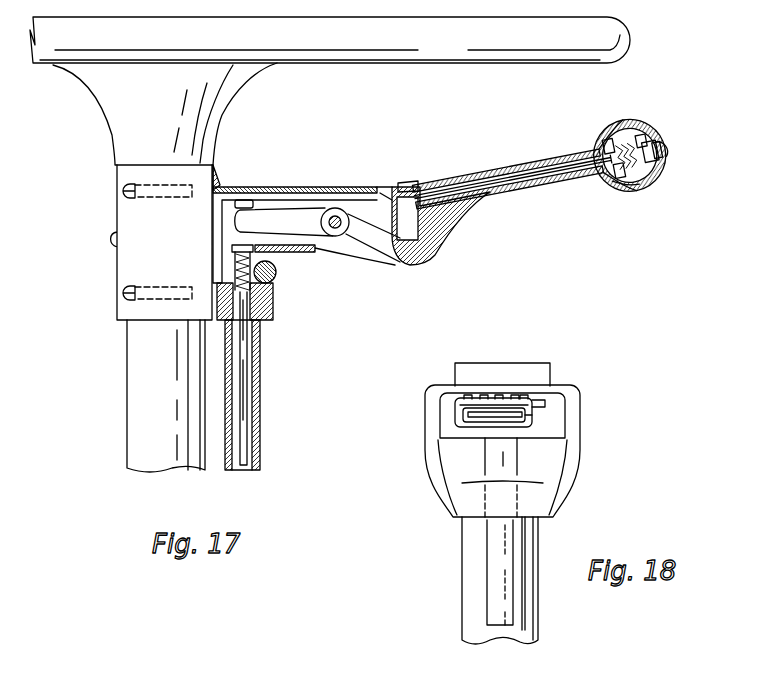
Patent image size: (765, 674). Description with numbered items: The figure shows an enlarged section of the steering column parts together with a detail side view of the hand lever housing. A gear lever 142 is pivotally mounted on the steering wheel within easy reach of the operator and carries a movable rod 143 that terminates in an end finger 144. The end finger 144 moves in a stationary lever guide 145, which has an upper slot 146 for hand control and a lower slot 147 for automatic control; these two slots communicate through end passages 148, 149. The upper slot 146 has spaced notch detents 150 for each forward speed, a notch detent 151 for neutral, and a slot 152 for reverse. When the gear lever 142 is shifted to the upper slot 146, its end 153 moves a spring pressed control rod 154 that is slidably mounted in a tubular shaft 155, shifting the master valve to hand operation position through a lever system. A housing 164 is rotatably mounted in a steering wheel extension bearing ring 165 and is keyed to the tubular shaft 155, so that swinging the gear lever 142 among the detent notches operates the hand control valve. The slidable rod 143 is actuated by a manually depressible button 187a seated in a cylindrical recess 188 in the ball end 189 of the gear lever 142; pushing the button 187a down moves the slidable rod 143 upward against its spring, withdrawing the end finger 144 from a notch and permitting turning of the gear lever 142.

In FIG. 17, the gear lever 142 is at (502, 170).
In FIG. 17, the movable rod 143 is at (518, 182).
In FIG. 17, the end finger 144 is at (417, 187).
In FIG. 17, the stationary lever guide 145 is at (393, 193).
In FIG. 18, the stationary lever guide 145 is at (557, 425).
In FIG. 18, the upper slot 146 is at (468, 405).
In FIG. 18, the lower slot 147 is at (482, 422).
In FIG. 18, the end passage 148 is at (460, 415).
In FIG. 18, the end passage 149 is at (532, 419).
In FIG. 18, the notch detents 150 is at (513, 397).
In FIG. 18, the notch detent 151 is at (528, 398).
In FIG. 18, the slot 152 is at (545, 403).
In FIG. 17, the end 153 is at (283, 226).
In FIG. 17, the spring pressed control rod 154 is at (248, 357).
In FIG. 17, the tubular shaft 155 is at (258, 427).
In FIG. 17, the housing 164 is at (305, 252).
In FIG. 17, the steering wheel extension bearing ring 165 is at (273, 303).
In FIG. 17, the manually depressible button 187a is at (663, 145).
In FIG. 17, the cylindrical recess 188 is at (625, 123).
In FIG. 17, the ball end 189 is at (638, 193).